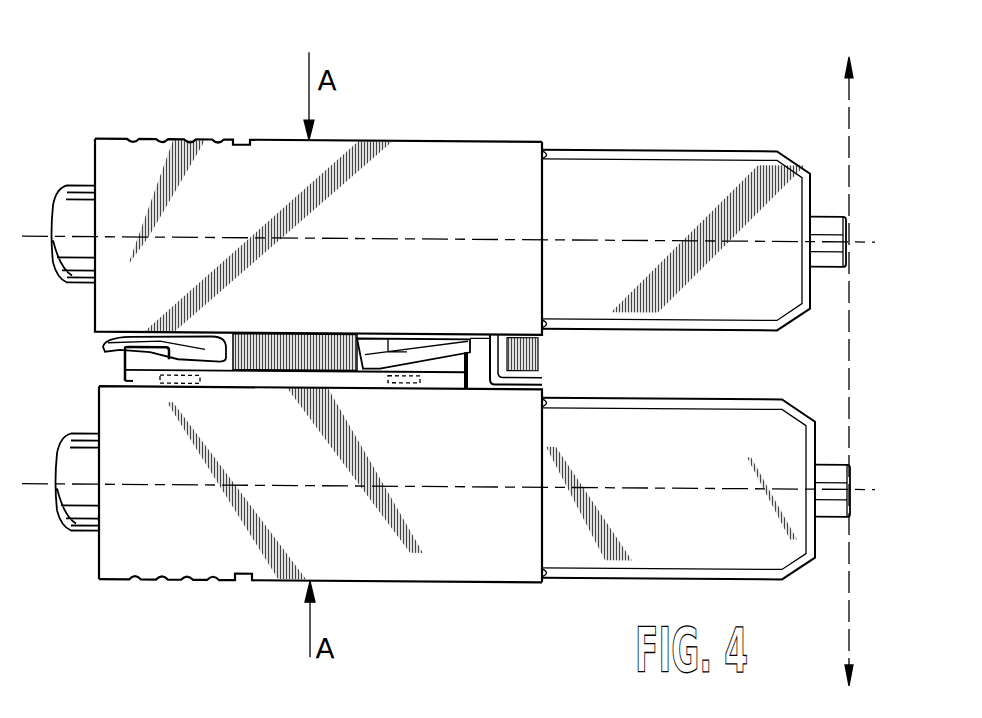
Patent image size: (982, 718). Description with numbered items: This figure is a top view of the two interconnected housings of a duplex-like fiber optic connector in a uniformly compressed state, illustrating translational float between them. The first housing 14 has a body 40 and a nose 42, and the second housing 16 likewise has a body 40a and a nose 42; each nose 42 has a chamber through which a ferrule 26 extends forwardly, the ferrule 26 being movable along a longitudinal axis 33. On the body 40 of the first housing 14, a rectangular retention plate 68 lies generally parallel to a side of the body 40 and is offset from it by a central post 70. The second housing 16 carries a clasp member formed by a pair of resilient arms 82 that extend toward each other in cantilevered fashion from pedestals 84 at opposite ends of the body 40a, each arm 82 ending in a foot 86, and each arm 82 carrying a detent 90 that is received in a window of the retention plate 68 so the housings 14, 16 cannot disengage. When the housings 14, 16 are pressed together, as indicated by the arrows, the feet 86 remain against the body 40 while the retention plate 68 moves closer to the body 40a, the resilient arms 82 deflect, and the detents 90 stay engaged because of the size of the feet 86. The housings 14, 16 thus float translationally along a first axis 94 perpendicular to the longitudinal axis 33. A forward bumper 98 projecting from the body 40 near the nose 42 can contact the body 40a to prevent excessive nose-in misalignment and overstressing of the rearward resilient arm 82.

The first housing 14 is at (455, 122).
The second housing 16 is at (273, 592).
The ferrule 26 is at (820, 212).
The longitudinal axis 33 is at (876, 236).
The body 40 is at (517, 173).
The body 40a is at (117, 559).
The nose 42 is at (658, 177).
The retention plate 68 is at (435, 375).
The central post 70 is at (298, 348).
The resilient arms 82 is at (100, 344).
The pedestals 84 is at (113, 365).
The foot 86 is at (423, 349).
The detent 90 is at (129, 380).
The first axis 94 is at (850, 104).
The forward bumper 98 is at (530, 362).